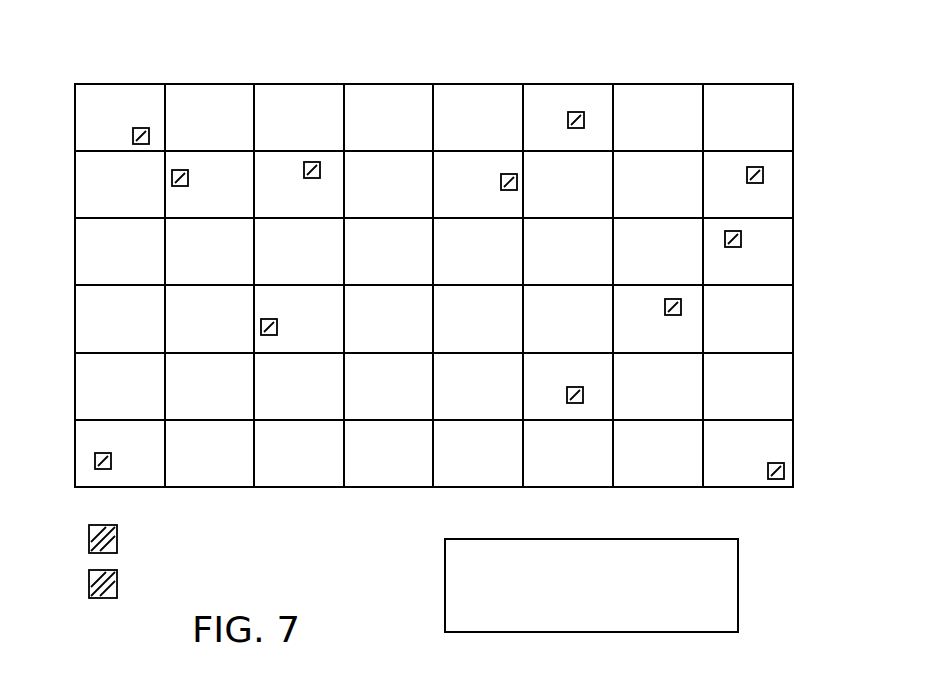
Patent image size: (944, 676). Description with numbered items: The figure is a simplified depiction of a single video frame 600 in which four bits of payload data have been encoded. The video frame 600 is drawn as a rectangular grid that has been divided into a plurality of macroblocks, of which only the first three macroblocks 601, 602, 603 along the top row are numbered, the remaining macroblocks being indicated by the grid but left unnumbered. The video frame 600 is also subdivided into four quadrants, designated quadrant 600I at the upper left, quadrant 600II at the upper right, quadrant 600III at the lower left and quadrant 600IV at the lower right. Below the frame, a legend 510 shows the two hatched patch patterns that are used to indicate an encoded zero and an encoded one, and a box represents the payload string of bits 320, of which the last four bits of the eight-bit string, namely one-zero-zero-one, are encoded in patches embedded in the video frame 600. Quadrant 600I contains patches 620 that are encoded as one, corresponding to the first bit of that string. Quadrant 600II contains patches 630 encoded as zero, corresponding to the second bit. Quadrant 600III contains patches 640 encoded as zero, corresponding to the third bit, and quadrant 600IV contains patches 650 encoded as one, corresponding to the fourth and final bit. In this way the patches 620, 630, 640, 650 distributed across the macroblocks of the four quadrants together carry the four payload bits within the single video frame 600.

The video frame 600 is at (795, 240).
The macroblock 601 is at (100, 86).
The macroblock 602 is at (198, 86).
The macroblock 603 is at (282, 86).
The quadrant 600I is at (385, 86).
The quadrant 600II is at (674, 88).
The quadrant 600III is at (292, 490).
The quadrant 600IV is at (640, 489).
The patches 620 is at (311, 163).
The patches 630 is at (746, 174).
The patches 640 is at (260, 326).
The patches 650 is at (584, 394).
The legend 510 is at (125, 523).
The payload string of bits 320 is at (740, 572).